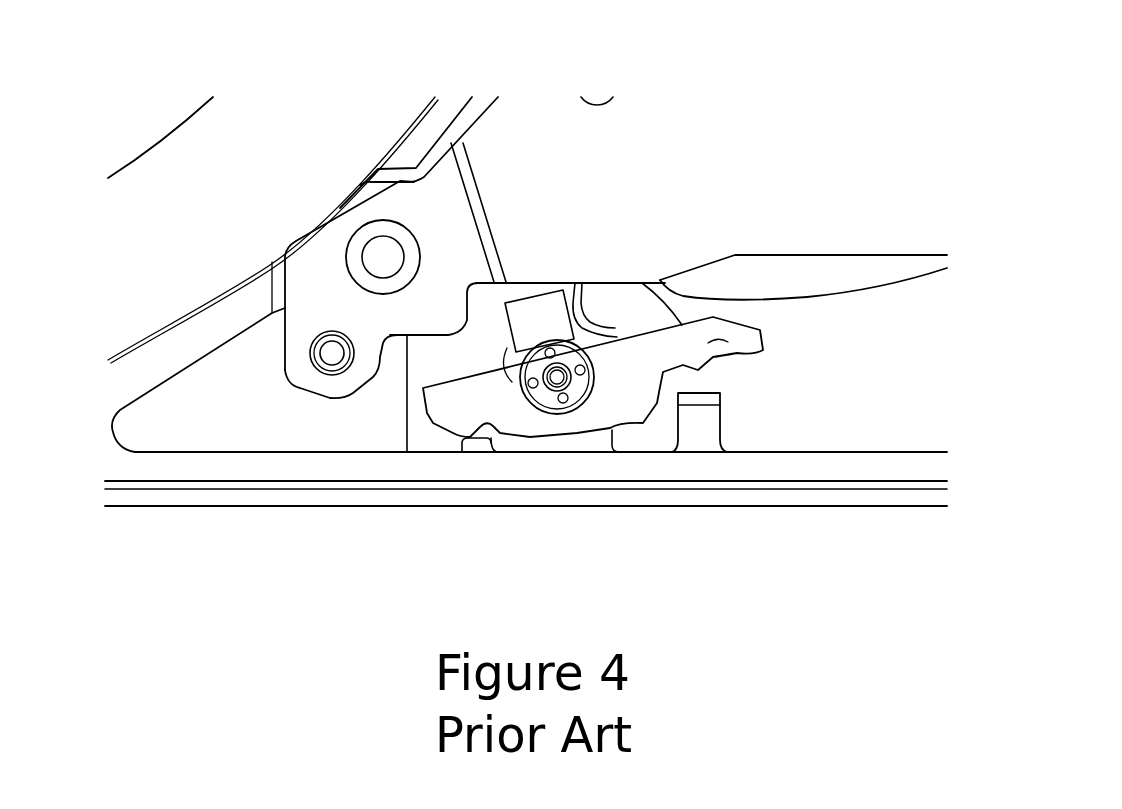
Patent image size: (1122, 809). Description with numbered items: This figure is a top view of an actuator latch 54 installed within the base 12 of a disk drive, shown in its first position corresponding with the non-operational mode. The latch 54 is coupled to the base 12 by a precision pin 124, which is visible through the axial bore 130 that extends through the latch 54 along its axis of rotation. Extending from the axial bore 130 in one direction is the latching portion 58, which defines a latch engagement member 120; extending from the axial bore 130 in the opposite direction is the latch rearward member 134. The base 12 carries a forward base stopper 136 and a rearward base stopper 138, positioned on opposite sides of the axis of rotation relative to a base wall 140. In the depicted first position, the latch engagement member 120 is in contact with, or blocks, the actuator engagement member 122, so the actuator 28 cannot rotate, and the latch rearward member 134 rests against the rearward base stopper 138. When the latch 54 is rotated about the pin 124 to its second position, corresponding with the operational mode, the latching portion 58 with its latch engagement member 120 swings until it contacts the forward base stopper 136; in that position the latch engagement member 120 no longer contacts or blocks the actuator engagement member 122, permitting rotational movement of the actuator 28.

The base 12 is at (919, 440).
The actuator 28 is at (783, 236).
The actuator latch 54 is at (553, 263).
The latching portion 58 is at (775, 333).
The latch engagement member 120 is at (735, 352).
The actuator engagement member 122 is at (627, 312).
The precision pin 124 is at (570, 370).
The axial bore 130 is at (530, 372).
The latch rearward member 134 is at (413, 421).
The forward base stopper 136 is at (710, 422).
The rearward base stopper 138 is at (487, 440).
The base wall 140 is at (272, 460).